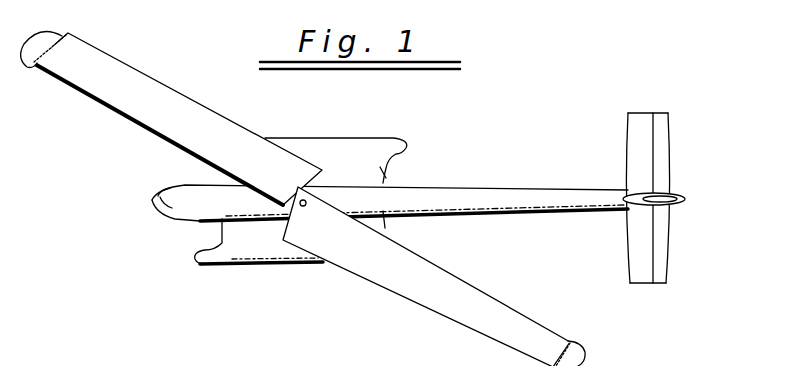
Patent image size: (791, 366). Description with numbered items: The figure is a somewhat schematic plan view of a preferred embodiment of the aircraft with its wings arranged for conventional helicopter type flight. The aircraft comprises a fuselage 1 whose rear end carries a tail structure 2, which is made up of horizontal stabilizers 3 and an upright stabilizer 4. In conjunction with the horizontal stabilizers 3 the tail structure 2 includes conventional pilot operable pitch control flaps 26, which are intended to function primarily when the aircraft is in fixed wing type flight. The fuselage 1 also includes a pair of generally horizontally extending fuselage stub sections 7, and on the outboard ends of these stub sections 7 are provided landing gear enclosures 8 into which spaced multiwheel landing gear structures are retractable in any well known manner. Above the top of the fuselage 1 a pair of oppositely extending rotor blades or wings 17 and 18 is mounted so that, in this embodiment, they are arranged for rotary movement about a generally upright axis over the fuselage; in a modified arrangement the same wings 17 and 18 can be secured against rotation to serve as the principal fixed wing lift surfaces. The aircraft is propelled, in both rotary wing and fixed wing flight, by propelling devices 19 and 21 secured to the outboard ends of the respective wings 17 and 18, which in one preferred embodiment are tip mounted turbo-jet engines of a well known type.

The fuselage 1 is at (458, 192).
The tail structure 2 is at (622, 219).
The horizontal stabilizers 3 is at (640, 125).
The upright stabilizer 4 is at (670, 198).
The fuselage stub sections 7 is at (386, 172).
The landing gear enclosures 8 is at (397, 146).
The rotor blade or wing 17 is at (204, 137).
The rotor blade or wing 18 is at (447, 298).
The propelling device 19 is at (45, 40).
The propelling device 21 is at (582, 350).
The pitch control flaps 26 is at (663, 157).